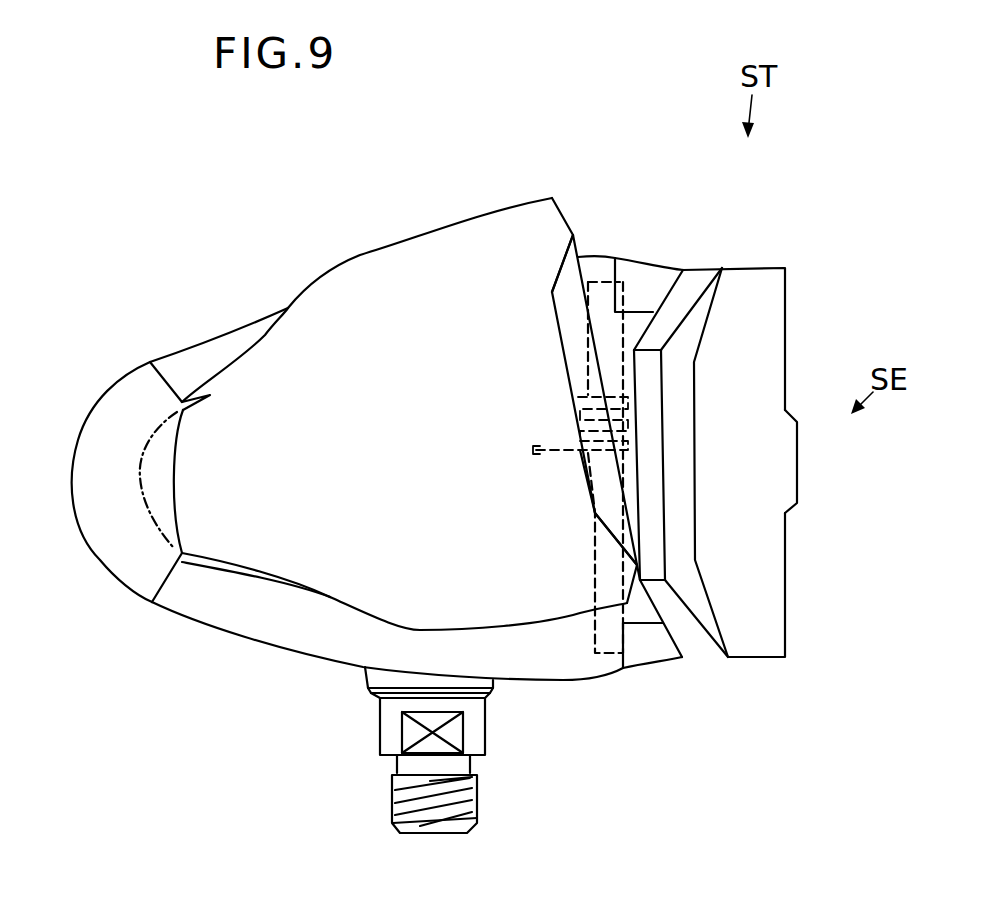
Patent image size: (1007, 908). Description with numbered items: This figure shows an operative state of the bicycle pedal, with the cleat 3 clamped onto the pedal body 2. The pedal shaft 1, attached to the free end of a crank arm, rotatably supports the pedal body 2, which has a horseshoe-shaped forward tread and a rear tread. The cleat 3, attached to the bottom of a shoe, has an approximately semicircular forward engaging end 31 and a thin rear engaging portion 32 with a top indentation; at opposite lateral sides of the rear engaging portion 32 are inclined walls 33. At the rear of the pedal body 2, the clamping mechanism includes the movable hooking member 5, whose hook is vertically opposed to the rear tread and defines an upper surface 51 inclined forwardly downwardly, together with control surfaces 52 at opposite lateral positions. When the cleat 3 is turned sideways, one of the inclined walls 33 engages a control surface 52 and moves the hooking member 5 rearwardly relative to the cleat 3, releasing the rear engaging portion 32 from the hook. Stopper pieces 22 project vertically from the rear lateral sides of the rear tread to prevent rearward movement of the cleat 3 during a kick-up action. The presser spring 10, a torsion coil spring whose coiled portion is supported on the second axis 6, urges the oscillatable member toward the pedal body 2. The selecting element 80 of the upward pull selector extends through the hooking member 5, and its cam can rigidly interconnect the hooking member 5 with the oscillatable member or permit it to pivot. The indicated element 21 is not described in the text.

The pedal shaft 1 is at (378, 723).
The pedal body 2 is at (603, 256).
The cleat 3 is at (418, 238).
The movable hooking member 5 is at (757, 268).
The second axis 6 is at (592, 638).
The presser spring 10 is at (548, 455).
The engaging recess 21 is at (142, 477).
The stopper pieces 22 is at (637, 285).
The forward engaging end 31 is at (158, 433).
The rear engaging portion 32 is at (620, 497).
The inclined walls 33 is at (573, 233).
The upper surface 51 is at (686, 395).
The control surfaces 52 is at (690, 305).
The selecting element 80 is at (797, 475).